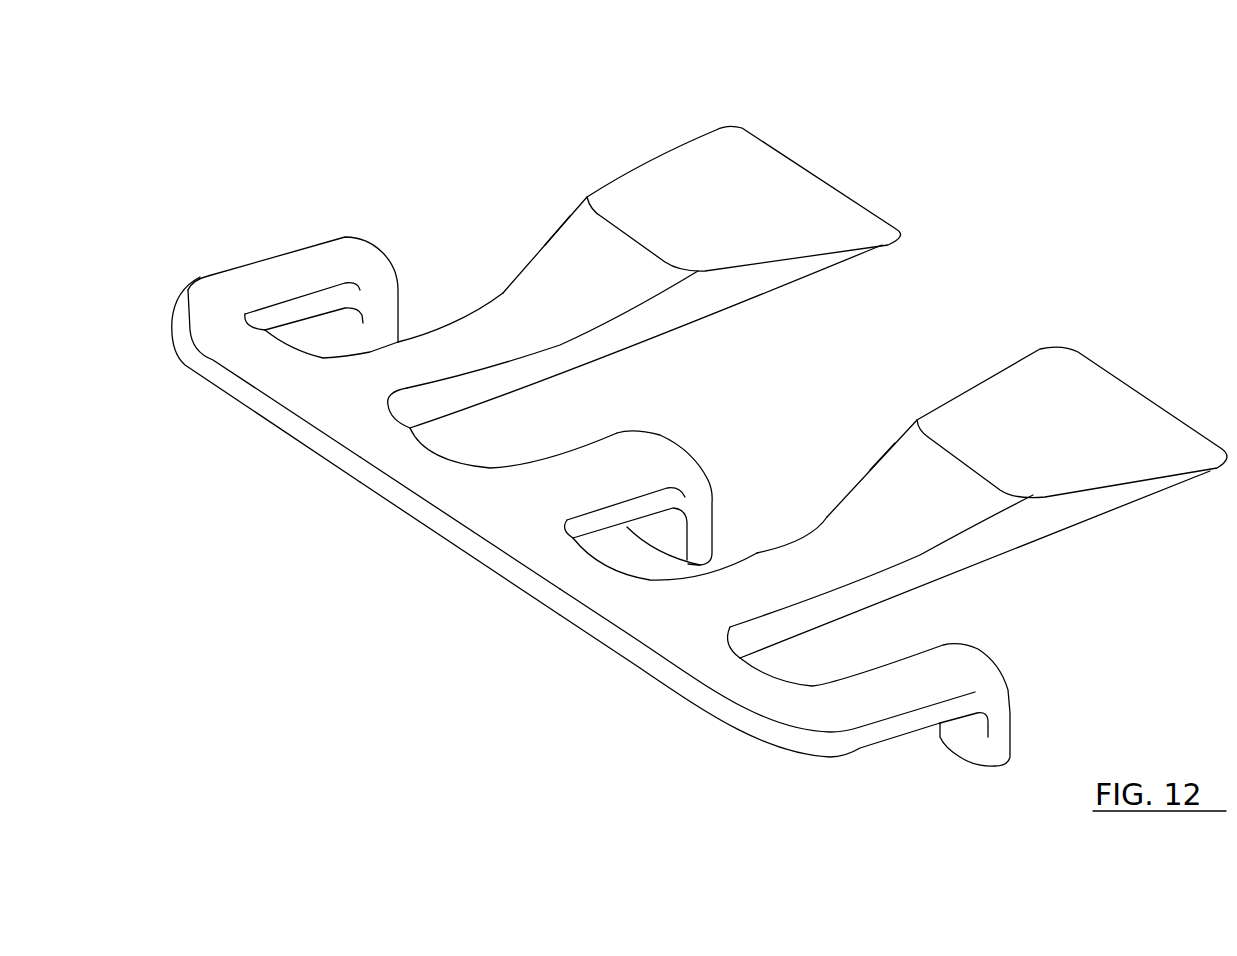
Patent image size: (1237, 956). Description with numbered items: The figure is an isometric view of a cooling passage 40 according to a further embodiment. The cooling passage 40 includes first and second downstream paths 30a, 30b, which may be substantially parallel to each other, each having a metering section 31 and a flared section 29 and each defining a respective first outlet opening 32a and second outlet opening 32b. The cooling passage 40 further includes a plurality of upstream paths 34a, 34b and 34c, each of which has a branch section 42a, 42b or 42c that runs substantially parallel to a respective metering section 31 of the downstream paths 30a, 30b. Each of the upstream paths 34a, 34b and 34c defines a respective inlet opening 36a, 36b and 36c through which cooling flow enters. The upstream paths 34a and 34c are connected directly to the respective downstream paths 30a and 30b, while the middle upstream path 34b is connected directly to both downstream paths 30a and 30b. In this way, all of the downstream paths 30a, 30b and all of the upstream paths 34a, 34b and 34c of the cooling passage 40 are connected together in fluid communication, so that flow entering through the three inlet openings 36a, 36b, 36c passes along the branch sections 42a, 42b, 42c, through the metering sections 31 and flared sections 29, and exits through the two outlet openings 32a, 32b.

The cooling passage 40 is at (1003, 215).
The flared section 29 is at (557, 238).
The first downstream path 30a is at (497, 297).
The second downstream path 30b is at (827, 517).
The metering section 31 is at (437, 330).
The first outlet opening 32a is at (720, 141).
The second outlet opening 32b is at (1082, 365).
The upstream path 34a is at (203, 367).
The upstream path 34b is at (390, 492).
The upstream path 34c is at (677, 683).
The inlet opening 36a is at (327, 314).
The inlet opening 36b is at (708, 563).
The inlet opening 36c is at (962, 762).
The branch section 42a is at (287, 251).
The branch section 42b is at (581, 447).
The branch section 42c is at (893, 660).